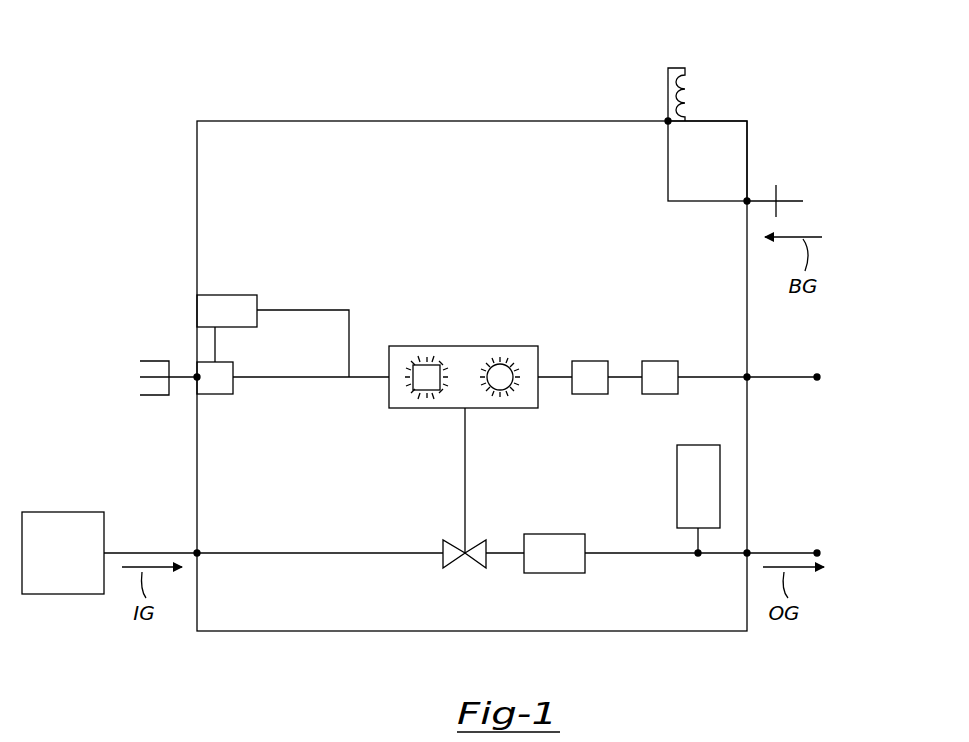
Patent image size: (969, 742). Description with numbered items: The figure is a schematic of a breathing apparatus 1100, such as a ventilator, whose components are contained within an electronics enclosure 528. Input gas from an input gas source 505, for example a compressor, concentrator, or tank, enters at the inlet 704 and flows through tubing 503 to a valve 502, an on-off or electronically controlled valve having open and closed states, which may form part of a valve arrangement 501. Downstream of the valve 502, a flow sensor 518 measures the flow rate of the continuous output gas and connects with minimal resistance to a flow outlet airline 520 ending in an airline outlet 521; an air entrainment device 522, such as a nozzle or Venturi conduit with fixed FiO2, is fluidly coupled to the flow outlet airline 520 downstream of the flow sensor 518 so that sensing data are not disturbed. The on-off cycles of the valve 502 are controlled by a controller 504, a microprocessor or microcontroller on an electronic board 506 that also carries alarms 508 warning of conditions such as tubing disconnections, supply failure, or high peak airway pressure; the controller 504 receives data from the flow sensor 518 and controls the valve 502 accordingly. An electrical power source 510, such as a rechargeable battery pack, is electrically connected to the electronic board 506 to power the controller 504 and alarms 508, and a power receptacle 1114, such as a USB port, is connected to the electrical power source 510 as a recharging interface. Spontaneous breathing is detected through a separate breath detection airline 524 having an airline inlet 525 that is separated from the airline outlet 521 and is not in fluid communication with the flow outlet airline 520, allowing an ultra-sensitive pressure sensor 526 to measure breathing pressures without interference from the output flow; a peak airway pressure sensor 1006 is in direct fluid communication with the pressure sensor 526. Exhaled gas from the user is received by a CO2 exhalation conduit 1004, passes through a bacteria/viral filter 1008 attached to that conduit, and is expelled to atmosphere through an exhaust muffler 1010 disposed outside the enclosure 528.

The breathing apparatus 1100 is at (598, 44).
The electronics enclosure 528 is at (312, 121).
The exhaust muffler 1010 is at (690, 73).
The CO2 exhalation conduit 1004 is at (762, 201).
The bacteria/viral filter 1008 is at (777, 208).
The electrical power source 510 is at (236, 295).
The power receptacle 1114 is at (155, 361).
The electronic board 506 is at (476, 346).
The controller 504 is at (422, 365).
The alarms 508 is at (516, 374).
The peak airway pressure sensor 1006 is at (592, 361).
The pressure sensor 526 is at (660, 361).
The breath detection airline 524 is at (751, 379).
The airline inlet 525 is at (819, 377).
The air entrainment device 522 is at (720, 468).
The input gas source 505 is at (62, 512).
The inlet 704 is at (190, 553).
The tubing 503 is at (281, 553).
The valve 502 is at (443, 543).
The valve arrangement 501 is at (481, 530).
The flow sensor 518 is at (555, 534).
The flow outlet airline 520 is at (751, 555).
The airline outlet 521 is at (819, 553).